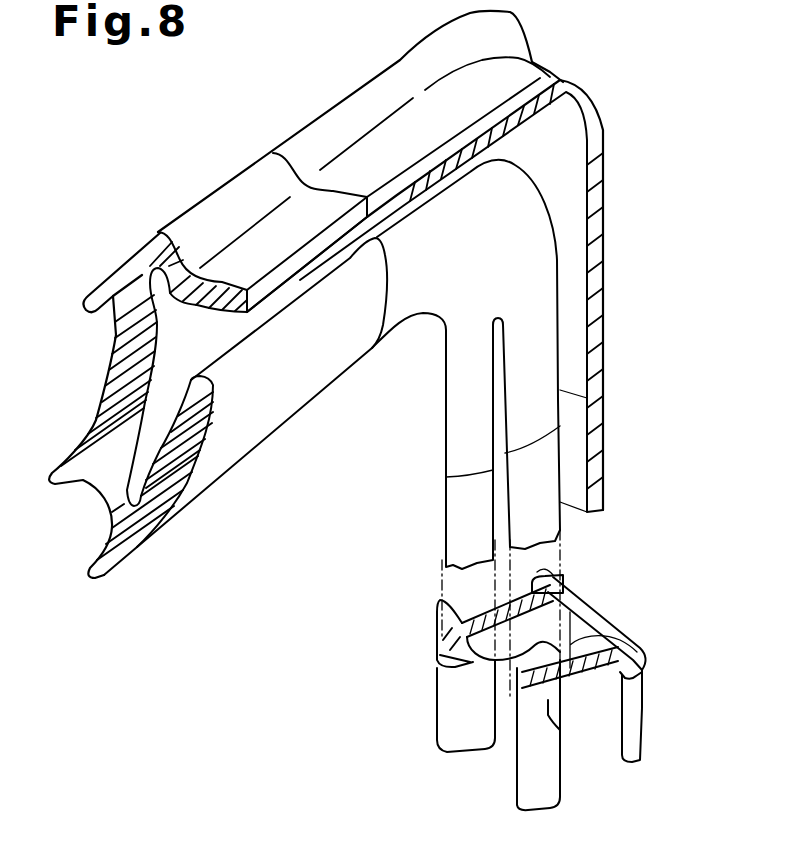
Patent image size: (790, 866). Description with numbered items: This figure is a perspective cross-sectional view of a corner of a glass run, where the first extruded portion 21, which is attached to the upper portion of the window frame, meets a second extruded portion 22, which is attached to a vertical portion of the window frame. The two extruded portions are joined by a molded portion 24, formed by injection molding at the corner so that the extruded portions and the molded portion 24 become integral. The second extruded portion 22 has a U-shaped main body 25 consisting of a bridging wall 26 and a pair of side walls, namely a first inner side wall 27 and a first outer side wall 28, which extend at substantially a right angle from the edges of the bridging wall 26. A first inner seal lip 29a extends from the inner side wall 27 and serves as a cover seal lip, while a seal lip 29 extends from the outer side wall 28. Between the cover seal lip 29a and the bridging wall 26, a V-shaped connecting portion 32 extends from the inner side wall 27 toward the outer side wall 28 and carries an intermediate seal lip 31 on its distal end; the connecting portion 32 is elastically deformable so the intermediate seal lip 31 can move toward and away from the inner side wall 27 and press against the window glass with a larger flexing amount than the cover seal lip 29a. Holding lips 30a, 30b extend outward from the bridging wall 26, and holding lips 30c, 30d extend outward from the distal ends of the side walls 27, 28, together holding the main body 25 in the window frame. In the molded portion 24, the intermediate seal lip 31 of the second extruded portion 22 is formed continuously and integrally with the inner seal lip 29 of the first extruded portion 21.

The first extruded portion 21 is at (177, 221).
The second extruded portion 22 is at (535, 682).
The molded portion 24 is at (580, 86).
The main body 25 is at (605, 640).
The bridging wall 26 is at (565, 612).
The first inner side wall 27 is at (112, 381).
The first outer side wall 28 is at (600, 748).
The seal lip 29 is at (243, 387).
The first inner seal lip 29a is at (437, 672).
The holding lip 30a is at (537, 572).
The holding lip 30b is at (623, 712).
The holding lip 30c is at (447, 600).
The holding lip 30d is at (550, 753).
The intermediate seal lip 31 is at (540, 357).
The connecting portion 32 is at (603, 620).